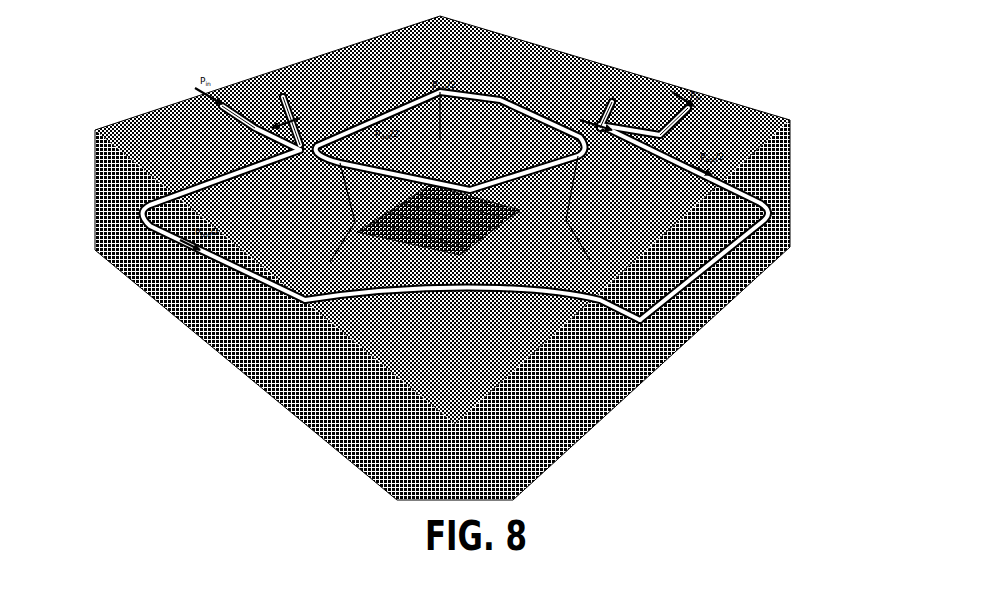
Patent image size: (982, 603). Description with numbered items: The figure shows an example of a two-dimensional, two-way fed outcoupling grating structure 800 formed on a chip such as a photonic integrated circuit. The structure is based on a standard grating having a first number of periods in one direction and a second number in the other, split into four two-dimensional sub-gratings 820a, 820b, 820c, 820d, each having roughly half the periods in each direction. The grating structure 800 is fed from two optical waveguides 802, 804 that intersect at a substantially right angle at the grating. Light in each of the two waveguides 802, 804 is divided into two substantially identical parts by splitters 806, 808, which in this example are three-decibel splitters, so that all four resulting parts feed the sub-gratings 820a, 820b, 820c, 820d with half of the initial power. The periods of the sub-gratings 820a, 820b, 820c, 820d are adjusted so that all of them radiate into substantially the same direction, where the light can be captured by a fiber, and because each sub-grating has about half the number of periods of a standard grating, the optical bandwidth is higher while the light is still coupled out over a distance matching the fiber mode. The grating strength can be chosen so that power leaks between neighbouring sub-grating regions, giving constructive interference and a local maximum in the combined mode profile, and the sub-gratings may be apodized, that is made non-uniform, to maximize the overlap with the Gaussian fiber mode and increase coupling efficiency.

The outcoupling grating structure 800 is at (680, 404).
The waveguide 802 is at (212, 104).
The waveguide 804 is at (696, 108).
The splitter 806 is at (278, 113).
The splitter 808 is at (612, 103).
The sub-grating 820a is at (448, 166).
The sub-grating 820b is at (498, 184).
The sub-grating 820c is at (452, 214).
The sub-grating 820d is at (398, 189).